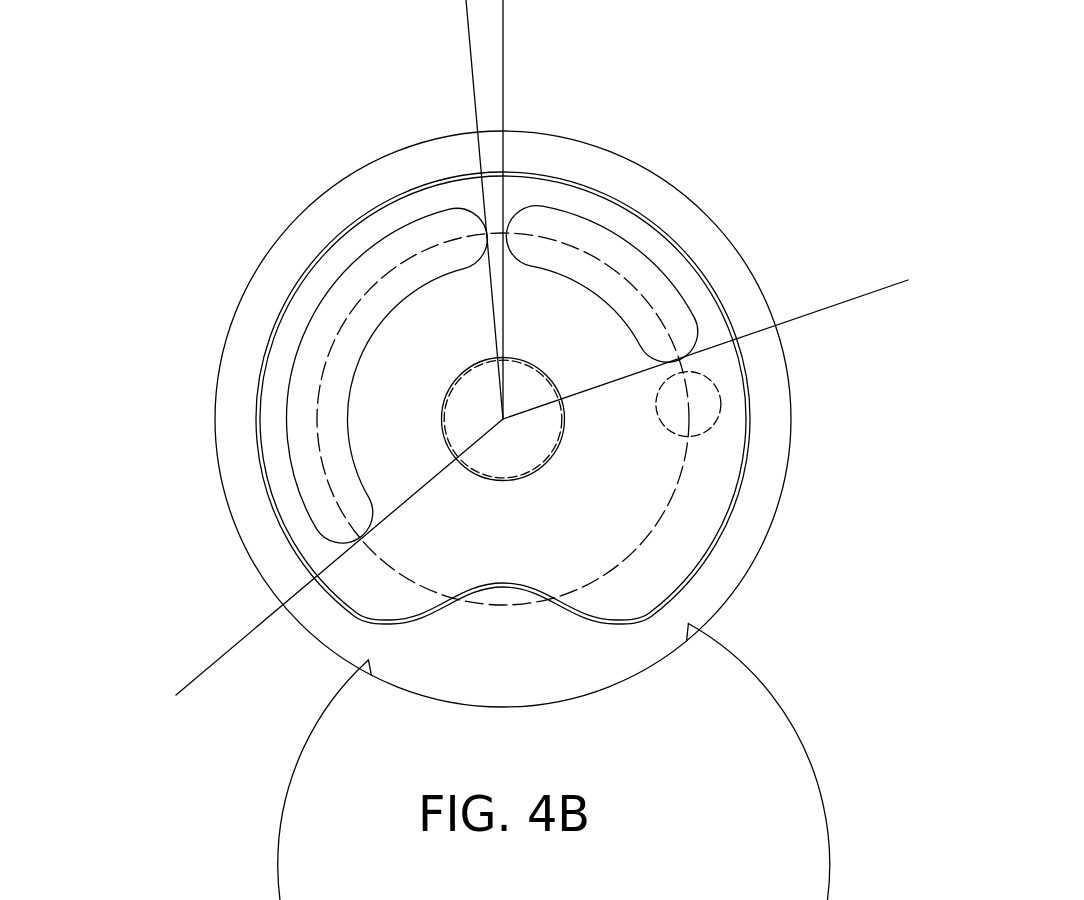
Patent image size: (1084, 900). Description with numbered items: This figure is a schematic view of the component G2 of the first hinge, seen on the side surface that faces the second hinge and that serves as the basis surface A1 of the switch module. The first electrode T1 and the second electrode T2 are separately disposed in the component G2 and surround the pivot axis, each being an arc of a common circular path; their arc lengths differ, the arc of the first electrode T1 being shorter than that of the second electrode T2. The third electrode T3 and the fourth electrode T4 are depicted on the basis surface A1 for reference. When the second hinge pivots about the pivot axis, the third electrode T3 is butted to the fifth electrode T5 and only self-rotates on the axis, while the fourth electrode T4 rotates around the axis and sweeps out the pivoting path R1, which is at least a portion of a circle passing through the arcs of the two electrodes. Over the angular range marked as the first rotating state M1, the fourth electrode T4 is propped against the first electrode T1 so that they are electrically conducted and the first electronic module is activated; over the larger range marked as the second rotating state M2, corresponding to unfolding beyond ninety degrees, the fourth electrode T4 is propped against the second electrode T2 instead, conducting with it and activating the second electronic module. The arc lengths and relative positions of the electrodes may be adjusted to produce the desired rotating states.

The first electrode T1 is at (620, 257).
The second electrode T2 is at (385, 252).
The third electrode T3 is at (516, 478).
The fourth electrode T4 is at (722, 403).
The fifth electrode T5 is at (568, 413).
The component G2 is at (573, 139).
The basis surface A1 is at (692, 512).
The pivoting path R1 is at (622, 562).
The first rotating state M1 is at (503, 20).
The second rotating state M2 is at (468, 20).